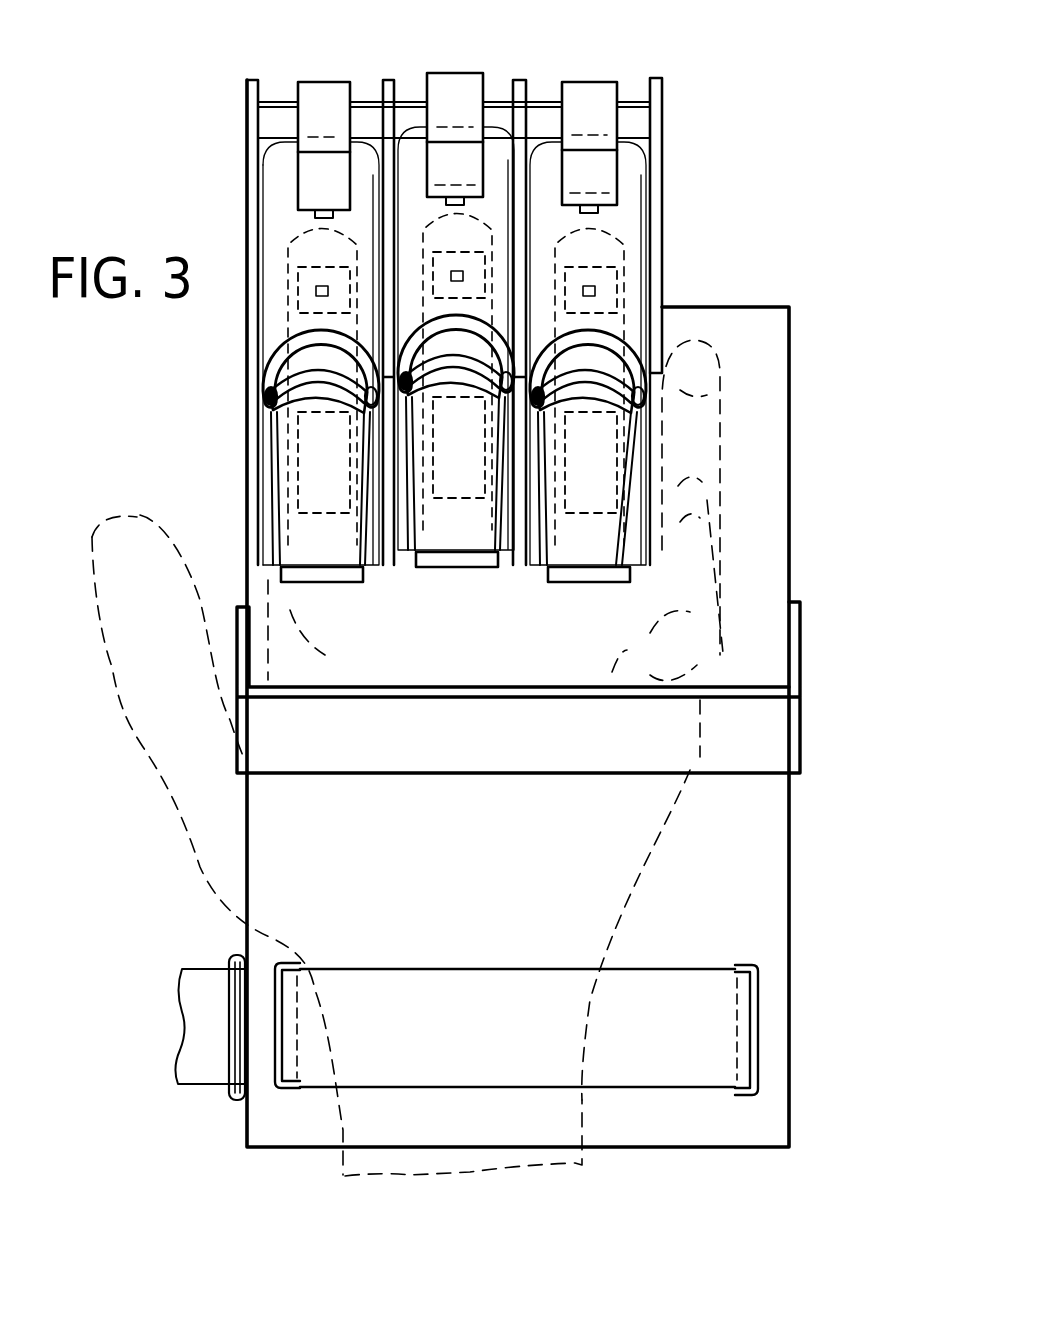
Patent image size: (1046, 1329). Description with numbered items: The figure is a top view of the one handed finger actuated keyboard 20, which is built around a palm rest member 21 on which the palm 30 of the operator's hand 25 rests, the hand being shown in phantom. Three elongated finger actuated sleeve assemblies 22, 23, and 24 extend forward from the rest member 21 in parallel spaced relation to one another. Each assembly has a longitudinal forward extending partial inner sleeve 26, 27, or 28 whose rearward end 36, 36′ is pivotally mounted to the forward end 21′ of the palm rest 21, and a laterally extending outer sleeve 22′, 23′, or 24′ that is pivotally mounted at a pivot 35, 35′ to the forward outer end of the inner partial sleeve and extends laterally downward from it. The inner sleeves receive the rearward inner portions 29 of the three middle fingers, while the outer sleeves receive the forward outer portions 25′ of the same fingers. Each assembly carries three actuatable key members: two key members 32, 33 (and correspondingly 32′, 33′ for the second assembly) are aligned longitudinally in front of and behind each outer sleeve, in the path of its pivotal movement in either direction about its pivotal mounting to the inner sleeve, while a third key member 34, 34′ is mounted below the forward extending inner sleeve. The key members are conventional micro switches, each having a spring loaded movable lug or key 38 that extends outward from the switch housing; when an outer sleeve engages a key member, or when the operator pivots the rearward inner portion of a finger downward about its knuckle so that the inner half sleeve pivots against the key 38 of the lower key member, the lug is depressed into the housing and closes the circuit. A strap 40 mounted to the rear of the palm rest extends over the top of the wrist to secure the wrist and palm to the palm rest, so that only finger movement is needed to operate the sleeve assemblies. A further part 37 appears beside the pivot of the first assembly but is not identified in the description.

The one handed finger actuated keyboard 20 is at (547, 613).
The palm rest member 21 is at (792, 497).
The forward end of the palm rest 21′ is at (758, 328).
The finger actuated sleeve assembly 22 is at (245, 96).
The laterally extending outer sleeve 22′ is at (275, 200).
The finger actuated sleeve assembly 23 is at (413, 96).
The laterally extending outer sleeve 23′ is at (493, 152).
The finger actuated sleeve assembly 24 is at (666, 126).
The laterally extending outer sleeve 24′ is at (660, 213).
The operator's hand 25 is at (662, 842).
The forward outer portion of finger 25′ is at (280, 300).
The partial inner sleeve 26 is at (272, 506).
The partial inner sleeve 27 is at (428, 588).
The partial inner sleeve 28 is at (636, 570).
The rearward inner portion of finger 29 is at (290, 432).
The palm 30 is at (428, 657).
The key member 32 is at (327, 95).
The key member 32′ is at (462, 85).
The key member 33 is at (296, 330).
The key member 33′ is at (470, 262).
The third key member 34 is at (283, 479).
The third key member 34′ is at (400, 570).
The pivot 35 is at (268, 402).
The pivot 35′ is at (430, 356).
The rearward end pivotal mounting 36 is at (293, 584).
The rearward end pivotal mounting 36′ is at (446, 570).
The pivot pin 37 is at (287, 378).
The movable lug or key 38 is at (326, 208).
The strap 40 is at (670, 978).